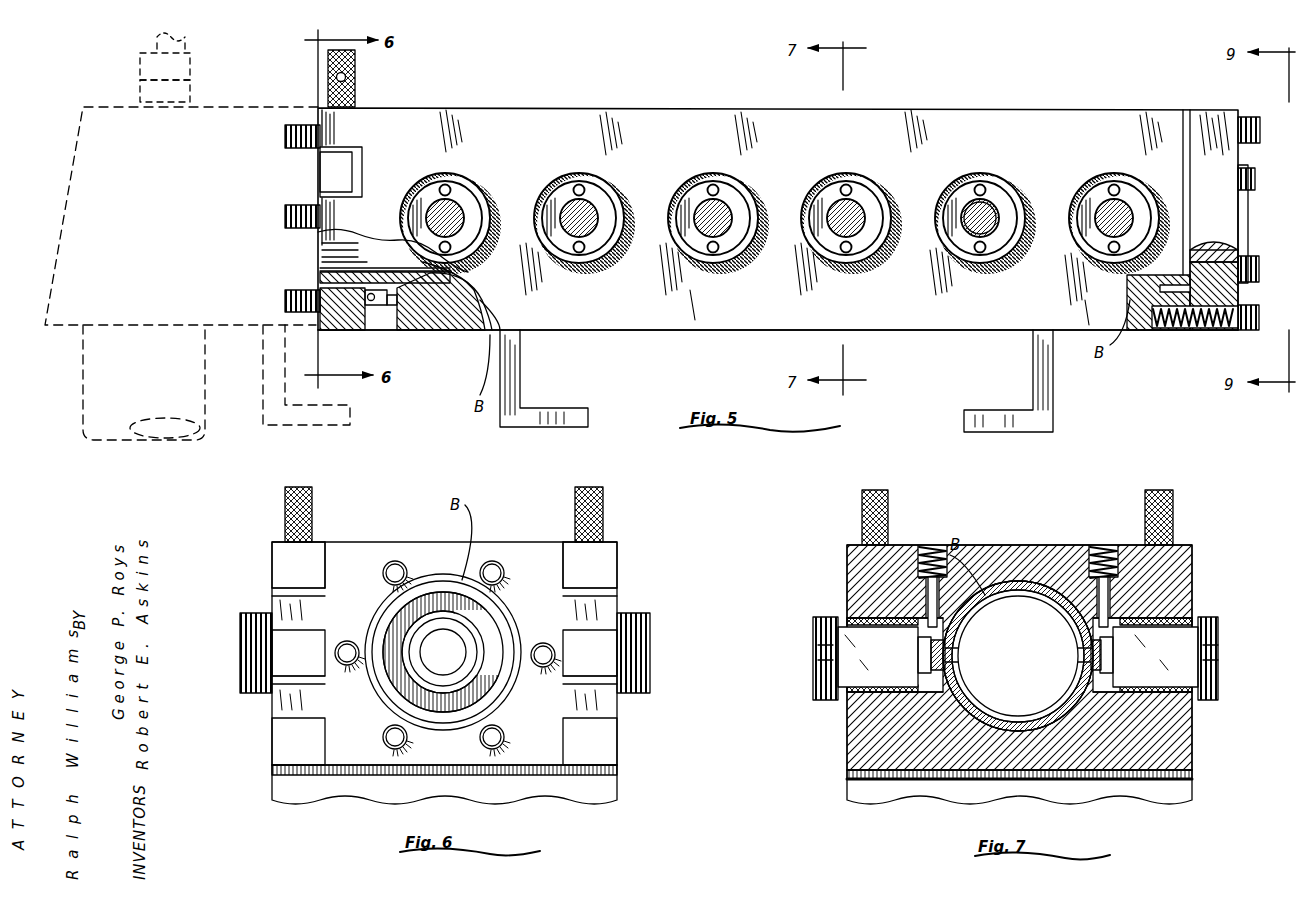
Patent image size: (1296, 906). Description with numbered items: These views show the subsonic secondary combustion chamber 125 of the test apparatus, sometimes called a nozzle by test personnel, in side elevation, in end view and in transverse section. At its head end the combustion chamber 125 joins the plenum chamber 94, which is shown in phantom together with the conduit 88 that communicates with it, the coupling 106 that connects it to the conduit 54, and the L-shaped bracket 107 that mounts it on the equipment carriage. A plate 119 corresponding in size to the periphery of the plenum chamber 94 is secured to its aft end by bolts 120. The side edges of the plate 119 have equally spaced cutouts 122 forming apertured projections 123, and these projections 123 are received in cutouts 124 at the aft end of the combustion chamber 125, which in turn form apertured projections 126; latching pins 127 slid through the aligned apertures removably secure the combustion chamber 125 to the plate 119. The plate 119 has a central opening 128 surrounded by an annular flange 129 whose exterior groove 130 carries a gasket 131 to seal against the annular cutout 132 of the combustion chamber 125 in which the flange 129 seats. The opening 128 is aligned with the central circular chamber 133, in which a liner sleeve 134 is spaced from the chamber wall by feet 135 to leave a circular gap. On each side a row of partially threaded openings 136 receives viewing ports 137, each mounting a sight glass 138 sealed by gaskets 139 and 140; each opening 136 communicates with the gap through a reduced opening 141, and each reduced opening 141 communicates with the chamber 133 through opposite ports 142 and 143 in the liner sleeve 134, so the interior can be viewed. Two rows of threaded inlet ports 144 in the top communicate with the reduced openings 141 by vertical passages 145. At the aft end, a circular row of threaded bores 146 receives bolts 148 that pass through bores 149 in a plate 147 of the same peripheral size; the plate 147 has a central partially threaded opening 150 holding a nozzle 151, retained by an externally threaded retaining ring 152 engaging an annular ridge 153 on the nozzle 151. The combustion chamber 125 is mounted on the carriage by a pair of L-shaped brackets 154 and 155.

In FIG. 5, the conduit 54 is at (190, 40).
In FIG. 5, the conduit 88 is at (83, 392).
In FIG. 5, the plenum chamber 94 is at (228, 94).
In FIG. 5, the coupling 106 is at (192, 68).
In FIG. 5, the L-shaped bracket 107 is at (330, 433).
In FIG. 5, the plate 119 is at (315, 300).
In FIG. 6, the plate 119 is at (383, 562).
In FIG. 5, the bolts 120 is at (278, 214).
In FIG. 6, the bolts 120 is at (398, 563).
In FIG. 6, the cutouts 122 is at (330, 555).
In FIG. 5, the projections 123 is at (333, 172).
In FIG. 6, the projections 123 is at (272, 600).
In FIG. 5, the cutouts 124 is at (363, 170).
In FIG. 6, the cutouts 124 is at (300, 608).
In FIG. 5, the sub-sonic secondary combustion chamber 125 is at (958, 335).
In FIG. 7, the sub-sonic secondary combustion chamber 125 is at (1003, 545).
In FIG. 5, the projections 126 is at (341, 177).
In FIG. 6, the projections 126 is at (444, 653).
In FIG. 5, the latching pins 127 is at (356, 82).
In FIG. 6, the latching pins 127 is at (313, 500).
In FIG. 7, the latching pins 127 is at (860, 515).
In FIG. 5, the opening 128 is at (320, 275).
In FIG. 6, the opening 128 is at (512, 640).
In FIG. 5, the annular flange 129 is at (368, 262).
In FIG. 5, the groove 130 is at (372, 301).
In FIG. 5, the gasket 131 is at (362, 322).
In FIG. 5, the annular cutout 132 is at (420, 330).
In FIG. 7, the circular chamber 133 is at (978, 600).
In FIG. 5, the liner sleeve 134 is at (470, 290).
In FIG. 6, the liner sleeve 134 is at (430, 585).
In FIG. 7, the liner sleeve 134 is at (1030, 590).
In FIG. 5, the feet 135 is at (488, 330).
In FIG. 7, the openings 136 is at (900, 625).
In FIG. 5, the viewing port 137 is at (1012, 195).
In FIG. 6, the viewing port 137 is at (238, 632).
In FIG. 7, the viewing port 137 is at (812, 632).
In FIG. 5, the sight glass 138 is at (976, 215).
In FIG. 7, the sight glass 138 is at (1018, 657).
In FIG. 7, the gasket 139 is at (830, 663).
In FIG. 7, the gasket 140 is at (925, 670).
In FIG. 7, the reduced opening 141 is at (940, 663).
In FIG. 7, the port 142 is at (960, 655).
In FIG. 7, the port 143 is at (1085, 658).
In FIG. 7, the inlet ports 144 is at (933, 547).
In FIG. 7, the passages 145 is at (928, 590).
In FIG. 5, the bores 146 is at (1165, 330).
In FIG. 5, the plate 147 is at (1220, 120).
In FIG. 5, the bolts 148 is at (1262, 130).
In FIG. 5, the bores 149 is at (1210, 330).
In FIG. 5, the opening 150 is at (1215, 253).
In FIG. 5, the nozzle 151 is at (1222, 262).
In FIG. 6, the nozzle 151 is at (450, 688).
In FIG. 5, the retaining ring 152 is at (1250, 235).
In FIG. 5, the annular ridge 153 is at (1277, 276).
In FIG. 5, the L-shaped bracket 154 is at (522, 360).
In FIG. 6, the L-shaped bracket 154 is at (588, 800).
In FIG. 7, the L-shaped bracket 154 is at (1130, 790).
In FIG. 5, the L-shaped bracket 155 is at (1055, 410).